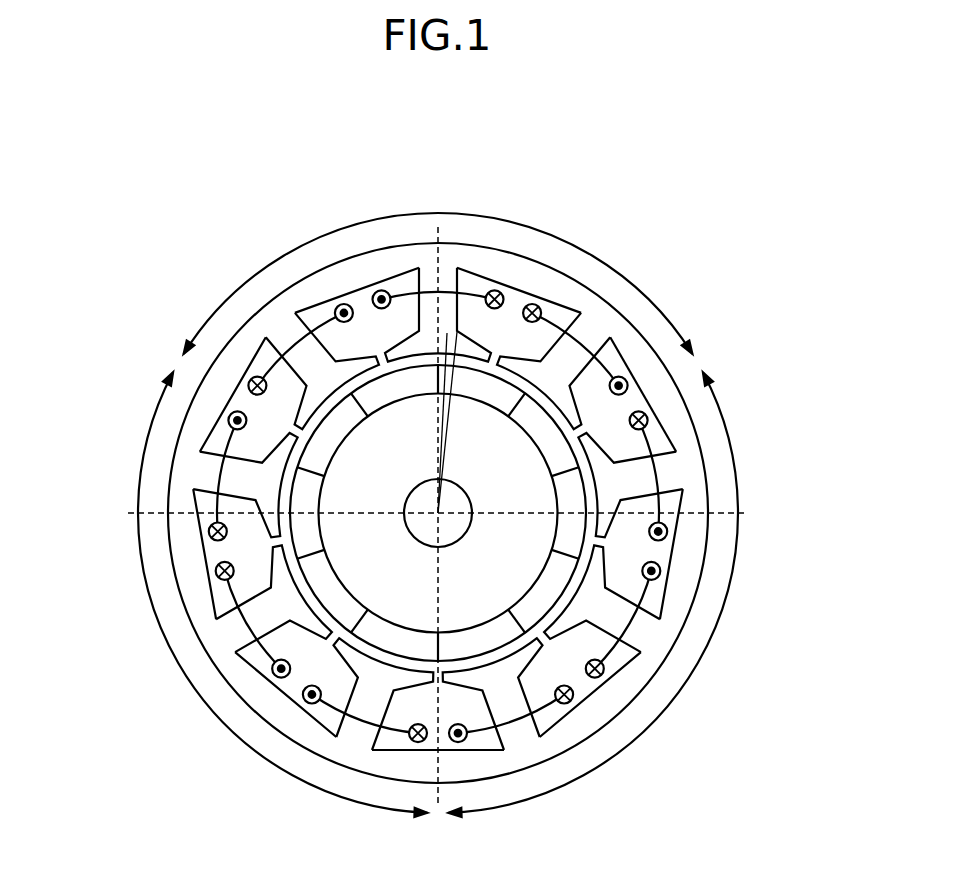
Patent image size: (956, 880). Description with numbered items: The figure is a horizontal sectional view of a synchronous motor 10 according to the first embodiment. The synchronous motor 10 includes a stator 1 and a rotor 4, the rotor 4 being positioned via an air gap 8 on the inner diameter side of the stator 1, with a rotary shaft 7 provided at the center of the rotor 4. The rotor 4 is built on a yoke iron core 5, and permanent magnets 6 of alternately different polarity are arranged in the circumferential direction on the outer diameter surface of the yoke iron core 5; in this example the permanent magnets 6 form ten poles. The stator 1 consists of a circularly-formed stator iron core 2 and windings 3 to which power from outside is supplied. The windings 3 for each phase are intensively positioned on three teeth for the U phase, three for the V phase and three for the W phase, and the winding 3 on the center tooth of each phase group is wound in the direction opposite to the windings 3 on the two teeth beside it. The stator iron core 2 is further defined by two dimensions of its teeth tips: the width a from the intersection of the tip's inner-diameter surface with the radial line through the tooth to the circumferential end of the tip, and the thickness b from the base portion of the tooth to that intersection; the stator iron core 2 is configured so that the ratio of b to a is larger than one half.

The synchronous motor 10 is at (592, 212).
The stator 1 is at (476, 512).
The stator iron core 2 is at (642, 322).
The windings 3 is at (630, 336).
The rotor 4 is at (574, 431).
The yoke iron core 5 is at (527, 497).
The permanent magnets 6 is at (567, 541).
The rotary shaft 7 is at (465, 535).
The air gap 8 is at (533, 628).
The width from intersection C to circumferential end a is at (463, 382).
The thickness from base portion to intersection C b is at (432, 396).